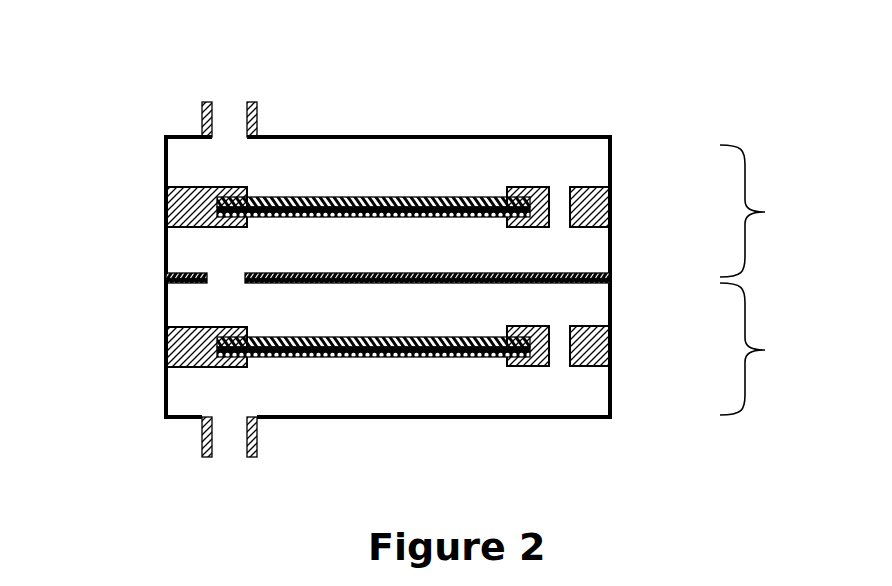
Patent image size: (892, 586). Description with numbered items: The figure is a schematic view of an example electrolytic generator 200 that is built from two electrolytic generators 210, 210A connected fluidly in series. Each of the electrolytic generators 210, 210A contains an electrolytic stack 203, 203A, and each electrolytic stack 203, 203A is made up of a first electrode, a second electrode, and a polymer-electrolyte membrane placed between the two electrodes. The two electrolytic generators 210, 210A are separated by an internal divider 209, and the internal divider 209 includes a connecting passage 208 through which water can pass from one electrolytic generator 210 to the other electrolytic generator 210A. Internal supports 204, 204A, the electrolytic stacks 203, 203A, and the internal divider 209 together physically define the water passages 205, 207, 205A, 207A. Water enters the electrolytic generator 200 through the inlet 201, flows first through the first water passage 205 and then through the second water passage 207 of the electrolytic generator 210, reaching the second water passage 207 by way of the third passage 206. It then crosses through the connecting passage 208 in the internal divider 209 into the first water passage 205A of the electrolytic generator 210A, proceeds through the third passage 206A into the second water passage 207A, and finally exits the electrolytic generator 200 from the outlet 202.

The electrolytic generator 200 is at (420, 117).
The inlet 201 is at (230, 107).
The outlet 202 is at (230, 452).
The electrolytic stack 203 is at (455, 193).
The electrolytic stack 203A is at (324, 330).
The internal support 204 is at (168, 194).
The internal support 204A is at (166, 358).
The first water passage 205 is at (353, 181).
The first water passage 205A is at (400, 323).
The third passage 206 is at (560, 193).
The third passage 206A is at (560, 358).
The second water passage 207 is at (423, 261).
The second water passage 207A is at (435, 400).
The connecting passage 208 is at (225, 278).
The internal divider 209 is at (603, 281).
The electrolytic generator 210 is at (773, 211).
The electrolytic generator 210A is at (780, 349).